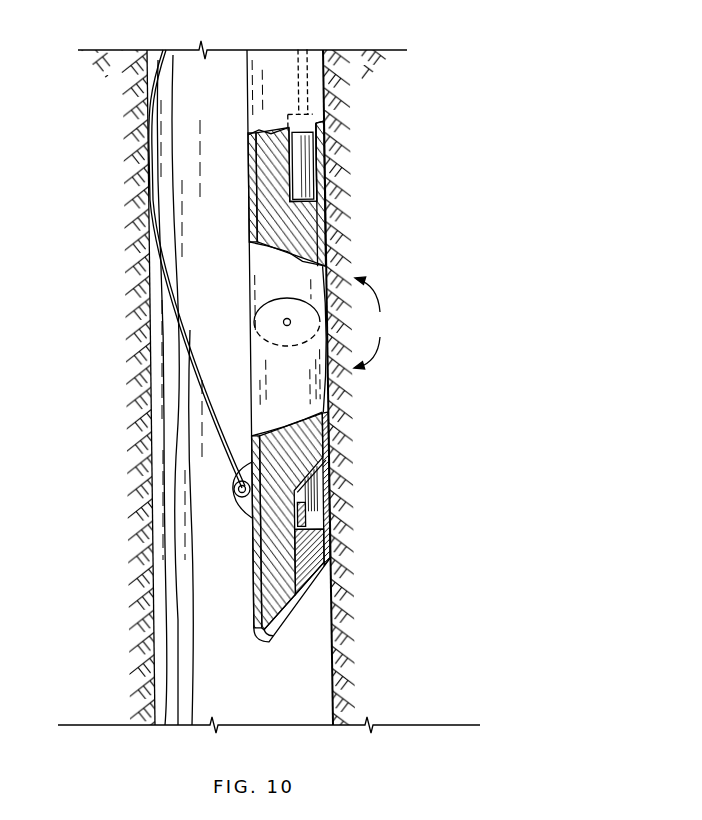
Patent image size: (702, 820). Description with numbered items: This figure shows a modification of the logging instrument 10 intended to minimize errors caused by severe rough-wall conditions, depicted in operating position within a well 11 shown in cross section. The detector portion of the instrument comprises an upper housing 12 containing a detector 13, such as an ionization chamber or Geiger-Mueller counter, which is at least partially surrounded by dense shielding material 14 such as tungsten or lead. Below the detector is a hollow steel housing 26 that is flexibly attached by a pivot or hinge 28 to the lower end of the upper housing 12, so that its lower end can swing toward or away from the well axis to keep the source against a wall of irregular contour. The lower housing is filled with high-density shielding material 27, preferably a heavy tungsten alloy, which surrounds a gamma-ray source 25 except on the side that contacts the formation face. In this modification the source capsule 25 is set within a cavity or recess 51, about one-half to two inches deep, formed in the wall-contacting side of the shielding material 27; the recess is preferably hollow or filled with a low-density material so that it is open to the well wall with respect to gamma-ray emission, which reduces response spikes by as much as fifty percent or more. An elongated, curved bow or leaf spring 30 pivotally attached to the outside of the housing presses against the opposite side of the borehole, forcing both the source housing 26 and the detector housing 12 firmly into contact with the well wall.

The logging instrument 10 is at (321, 345).
The well 11 is at (155, 633).
The upper housing 12 is at (270, 50).
The detector 13 is at (308, 181).
The dense shielding material 14 is at (262, 177).
The source 25 is at (300, 518).
The hollow steel housing 26 is at (275, 640).
The high-density shielding material 27 is at (270, 572).
The pivot or hinge 28 is at (285, 320).
The bow or leaf spring 30 is at (176, 313).
The cavity or recess 51 is at (316, 510).